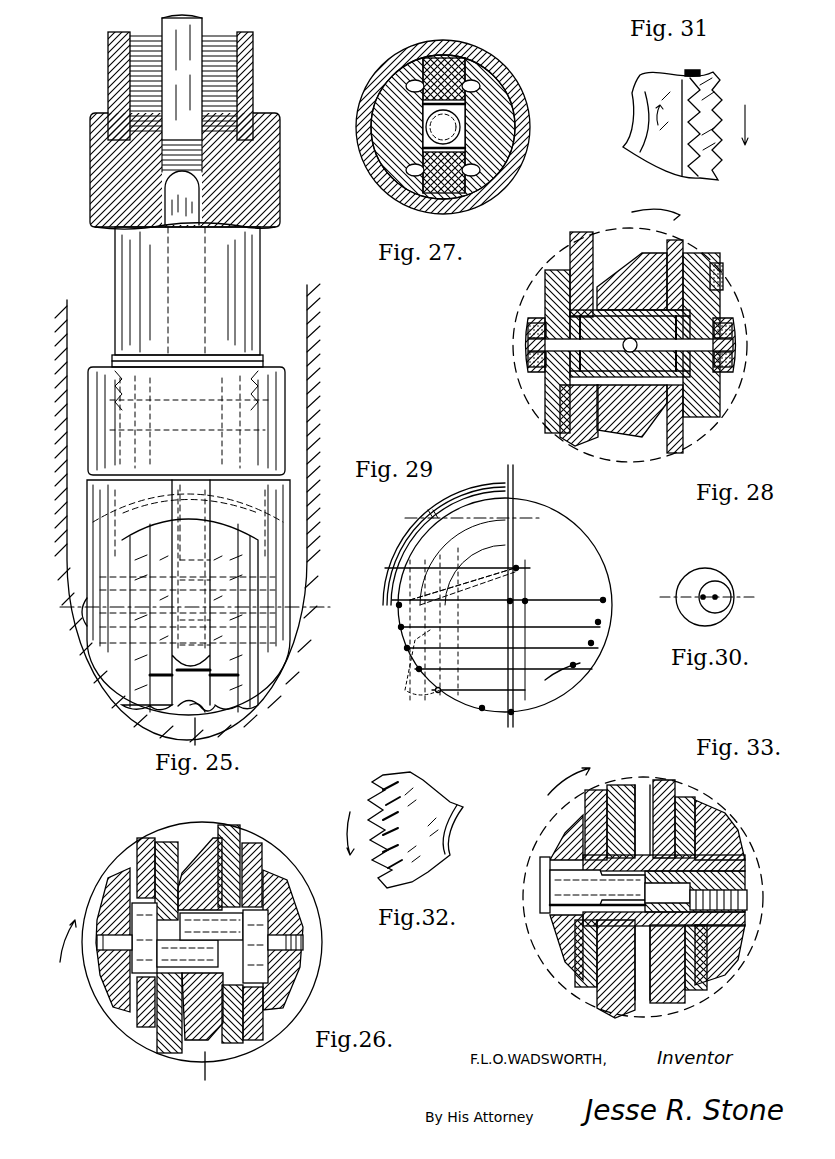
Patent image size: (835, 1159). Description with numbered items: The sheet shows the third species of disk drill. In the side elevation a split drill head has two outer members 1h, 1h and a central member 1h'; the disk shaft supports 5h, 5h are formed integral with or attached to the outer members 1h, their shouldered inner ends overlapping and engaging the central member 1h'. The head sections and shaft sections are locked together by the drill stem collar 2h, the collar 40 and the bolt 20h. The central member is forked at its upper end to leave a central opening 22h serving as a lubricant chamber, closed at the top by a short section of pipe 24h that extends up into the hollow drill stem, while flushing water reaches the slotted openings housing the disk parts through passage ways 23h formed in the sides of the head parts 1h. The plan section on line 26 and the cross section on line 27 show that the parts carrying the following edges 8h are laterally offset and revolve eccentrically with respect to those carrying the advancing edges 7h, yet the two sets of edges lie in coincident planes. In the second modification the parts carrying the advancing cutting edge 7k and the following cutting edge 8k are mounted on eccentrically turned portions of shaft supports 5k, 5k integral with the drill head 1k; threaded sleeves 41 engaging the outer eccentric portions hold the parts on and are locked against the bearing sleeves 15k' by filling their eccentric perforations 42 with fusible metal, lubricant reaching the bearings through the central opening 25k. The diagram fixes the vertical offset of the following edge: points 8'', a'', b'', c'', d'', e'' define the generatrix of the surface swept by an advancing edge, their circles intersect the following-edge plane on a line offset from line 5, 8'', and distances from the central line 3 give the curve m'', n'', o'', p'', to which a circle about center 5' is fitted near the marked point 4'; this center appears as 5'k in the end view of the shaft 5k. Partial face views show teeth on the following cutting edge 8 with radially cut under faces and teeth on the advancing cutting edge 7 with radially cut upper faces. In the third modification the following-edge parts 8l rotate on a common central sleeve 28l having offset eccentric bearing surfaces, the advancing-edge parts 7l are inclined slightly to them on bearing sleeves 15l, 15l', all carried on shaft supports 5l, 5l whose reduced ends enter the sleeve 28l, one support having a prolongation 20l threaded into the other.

In FIG. 25, the short section of pipe 24h is at (182, 77).
In FIG. 25, the drill stem collar 2h is at (253, 86).
In FIG. 27, the drill stem collar 2h is at (530, 128).
In FIG. 25, the section line 27— 27 is at (95, 197).
In FIG. 25, the outer members of split drill head 1h is at (211, 439).
In FIG. 27, the outer members of split drill head 1h is at (440, 127).
In FIG. 26, the outer members of split drill head 1h is at (204, 927).
In FIG. 25, the central member of drill head 1h' is at (201, 733).
In FIG. 27, the central member of drill head 1h' is at (454, 103).
In FIG. 26, the central member of drill head 1h' is at (213, 1070).
In FIG. 25, the collar 40 is at (285, 398).
In FIG. 25, the section line 26— 26 is at (191, 605).
In FIG. 25, the bolt 20h is at (84, 616).
In FIG. 26, the bolt 20h is at (97, 942).
In FIG. 25, the following edges 8h is at (150, 712).
In FIG. 26, the following edges 8h is at (242, 838).
In FIG. 25, the advancing edges 7h is at (242, 715).
In FIG. 26, the advancing edges 7h is at (150, 838).
In FIG. 27, the central opening 22h is at (444, 126).
In FIG. 27, the passage ways 23h is at (408, 82).
In FIG. 31, the advancing cutting edge 7 is at (728, 95).
In FIG. 29, the advancing cutting edge 7 is at (451, 583).
In FIG. 32, the advancing cutting edge 7 is at (390, 785).
In FIG. 31, the following cutting edge 8 is at (686, 134).
In FIG. 28, the drill head 1k is at (638, 262).
In FIG. 28, the bearing sleeves 15k' is at (639, 343).
In FIG. 28, the advancing cutting edge 7k is at (585, 232).
In FIG. 28, the following cutting edge 8k is at (700, 262).
In FIG. 29, the following cutting edge 8k is at (479, 516).
In FIG. 28, the central opening 25k is at (630, 343).
In FIG. 28, the shaft supports 5k is at (738, 318).
In FIG. 30, the shaft supports 5k is at (697, 575).
In FIG. 28, the threaded sleeves 41 is at (528, 330).
In FIG. 28, the perforations 42 is at (528, 360).
In FIG. 29, the central line 3 is at (516, 596).
In FIG. 29, the point 4' is at (526, 563).
In FIG. 29, the shaft support center point 5 is at (497, 609).
In FIG. 29, the center of following cutting edge 5' is at (535, 630).
In FIG. 29, the generatrix point 8'' is at (390, 603).
In FIG. 29, the generatrix point a'' is at (491, 627).
In FIG. 29, the generatrix point b'' is at (492, 648).
In FIG. 29, the generatrix point c'' is at (494, 669).
In FIG. 29, the generatrix point d'' is at (470, 693).
In FIG. 29, the generatrix point e'' is at (479, 716).
In FIG. 29, the intersection curve point m'' is at (594, 595).
In FIG. 29, the intersection curve point n'' is at (596, 616).
In FIG. 29, the intersection curve point o'' is at (589, 637).
In FIG. 29, the intersection curve point p'' is at (562, 665).
In FIG. 30, the center of following cutting edge shaft 5'k is at (734, 591).
In FIG. 26, the shaft supports 5h is at (135, 955).
In FIG. 33, the cutter disc 15l is at (645, 889).
In FIG. 33, the bearing sleeves 15l' is at (642, 887).
In FIG. 33, the advancing cutting edges 7l is at (598, 790).
In FIG. 33, the following cutting edges 8l is at (676, 786).
In FIG. 33, the common central sleeve 28l is at (642, 784).
In FIG. 33, the shaft supports 5l is at (548, 884).
In FIG. 33, the prolongation 20l is at (750, 904).